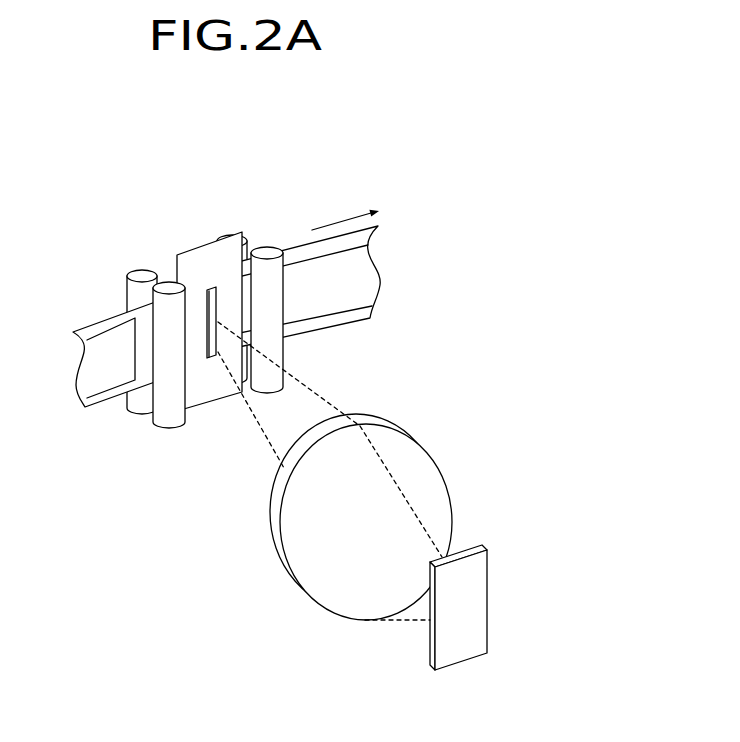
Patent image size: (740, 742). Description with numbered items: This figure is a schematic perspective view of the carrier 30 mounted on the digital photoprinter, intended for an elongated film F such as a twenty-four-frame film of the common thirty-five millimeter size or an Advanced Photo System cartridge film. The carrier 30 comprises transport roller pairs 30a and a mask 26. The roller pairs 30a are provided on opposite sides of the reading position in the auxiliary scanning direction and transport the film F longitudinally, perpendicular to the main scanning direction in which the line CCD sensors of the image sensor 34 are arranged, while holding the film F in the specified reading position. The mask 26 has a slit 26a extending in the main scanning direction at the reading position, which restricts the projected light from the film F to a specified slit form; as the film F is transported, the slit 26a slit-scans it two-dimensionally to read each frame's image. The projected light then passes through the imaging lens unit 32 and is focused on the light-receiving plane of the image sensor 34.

The carrier 30 is at (146, 232).
The transport roller pair 30a is at (167, 413).
The mask 26 is at (208, 387).
The slit 26a is at (212, 287).
The film F is at (348, 277).
The imaging lens unit 32 is at (408, 457).
The image sensor 34 is at (470, 598).